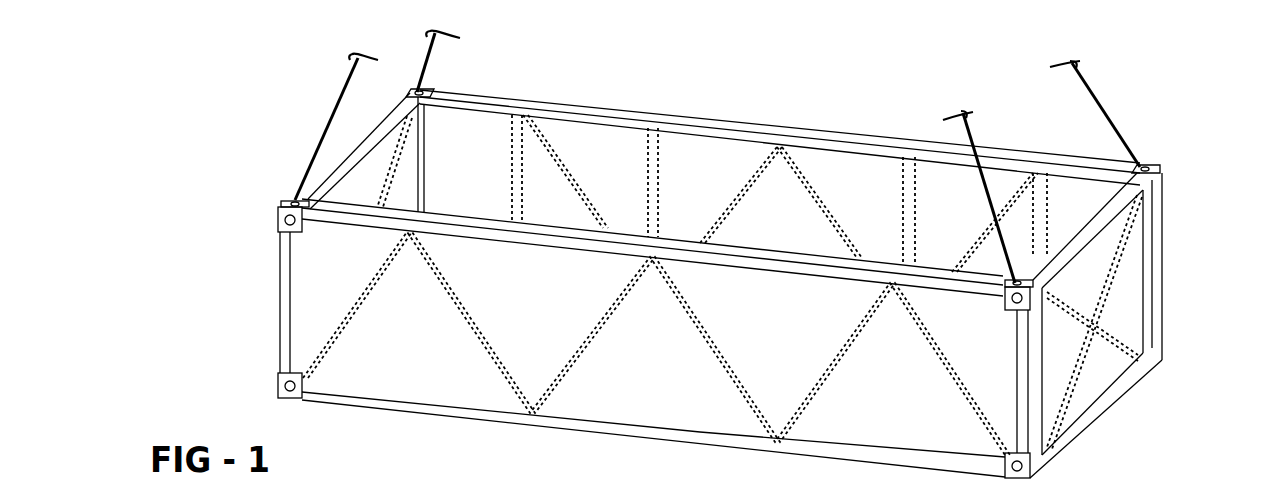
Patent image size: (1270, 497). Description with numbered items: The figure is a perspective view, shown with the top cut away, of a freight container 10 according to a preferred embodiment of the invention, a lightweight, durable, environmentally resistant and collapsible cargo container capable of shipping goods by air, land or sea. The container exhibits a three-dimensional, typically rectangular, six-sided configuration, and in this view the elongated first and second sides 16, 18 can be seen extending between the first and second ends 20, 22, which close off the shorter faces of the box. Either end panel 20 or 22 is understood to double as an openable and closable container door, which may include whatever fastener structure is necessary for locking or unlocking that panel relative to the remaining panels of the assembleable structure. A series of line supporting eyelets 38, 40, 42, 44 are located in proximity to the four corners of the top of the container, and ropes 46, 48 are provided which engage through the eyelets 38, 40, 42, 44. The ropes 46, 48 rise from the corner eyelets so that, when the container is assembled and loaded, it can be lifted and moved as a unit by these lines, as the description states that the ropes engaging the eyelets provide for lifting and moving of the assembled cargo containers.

The freight container 10 is at (281, 131).
The first side 16 is at (318, 286).
The second side 18 is at (700, 163).
The first end 20 is at (350, 156).
The second end 22 is at (1093, 264).
The line supporting eyelet 38 is at (428, 90).
The line supporting eyelet 40 is at (283, 201).
The line supporting eyelet 42 is at (1025, 303).
The line supporting eyelet 44 is at (1150, 165).
The rope 46 is at (421, 78).
The rope 48 is at (1110, 121).